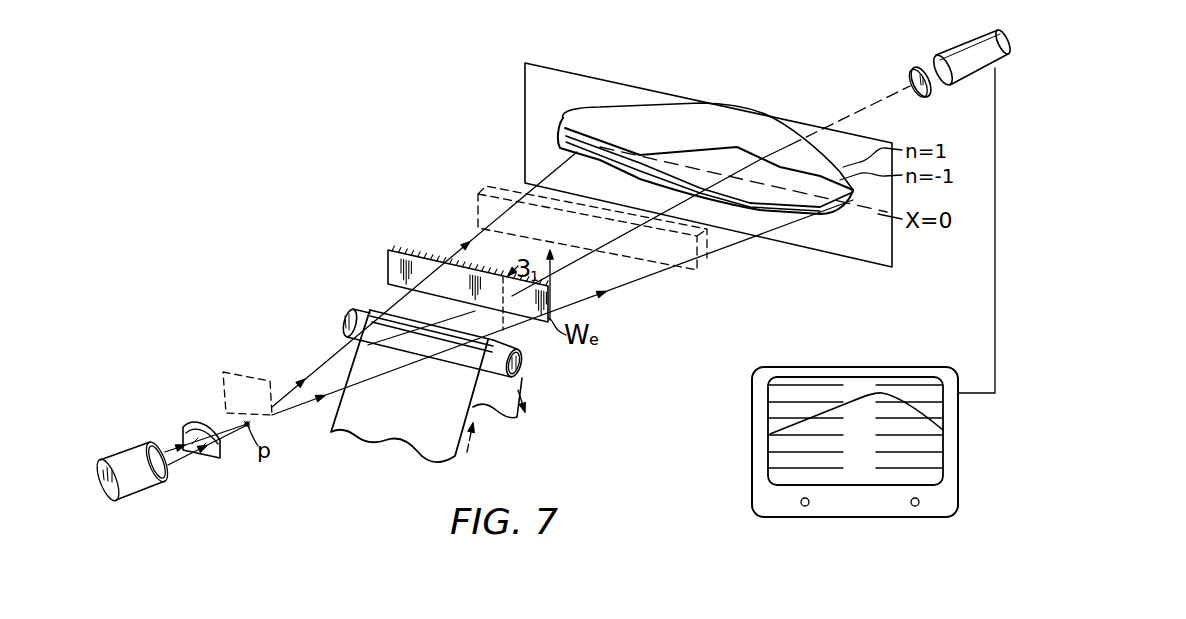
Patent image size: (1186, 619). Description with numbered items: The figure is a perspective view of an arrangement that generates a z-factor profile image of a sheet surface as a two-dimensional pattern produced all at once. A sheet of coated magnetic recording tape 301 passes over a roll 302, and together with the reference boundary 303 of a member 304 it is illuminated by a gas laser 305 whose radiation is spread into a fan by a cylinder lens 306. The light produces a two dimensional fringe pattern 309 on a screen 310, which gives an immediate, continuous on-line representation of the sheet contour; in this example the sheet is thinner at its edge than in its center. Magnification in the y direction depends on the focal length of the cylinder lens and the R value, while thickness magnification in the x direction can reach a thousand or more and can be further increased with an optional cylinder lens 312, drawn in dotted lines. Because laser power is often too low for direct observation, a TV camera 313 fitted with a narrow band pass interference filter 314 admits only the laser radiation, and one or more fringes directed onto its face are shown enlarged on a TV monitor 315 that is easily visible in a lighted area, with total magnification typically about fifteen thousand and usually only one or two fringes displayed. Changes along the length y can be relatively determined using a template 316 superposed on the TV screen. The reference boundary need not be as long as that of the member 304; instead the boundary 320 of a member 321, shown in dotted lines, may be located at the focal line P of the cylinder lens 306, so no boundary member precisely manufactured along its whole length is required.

The coated magnetic recording tape 301 is at (456, 455).
The roll 302 is at (524, 364).
The reference boundary 303 is at (435, 313).
The member 304 is at (389, 266).
The gas laser 305 is at (156, 486).
The cylinder lens 306 is at (210, 460).
The two dimensional fringe pattern 309 is at (583, 87).
The screen 310 is at (525, 105).
The optional cylinder lens 312 is at (697, 272).
The TV camera 313 is at (977, 80).
The narrow band pass interference filter 314 is at (917, 64).
The TV monitor 315 is at (758, 428).
The template 316 is at (790, 472).
The boundary 320 is at (274, 418).
The member 321 is at (228, 371).